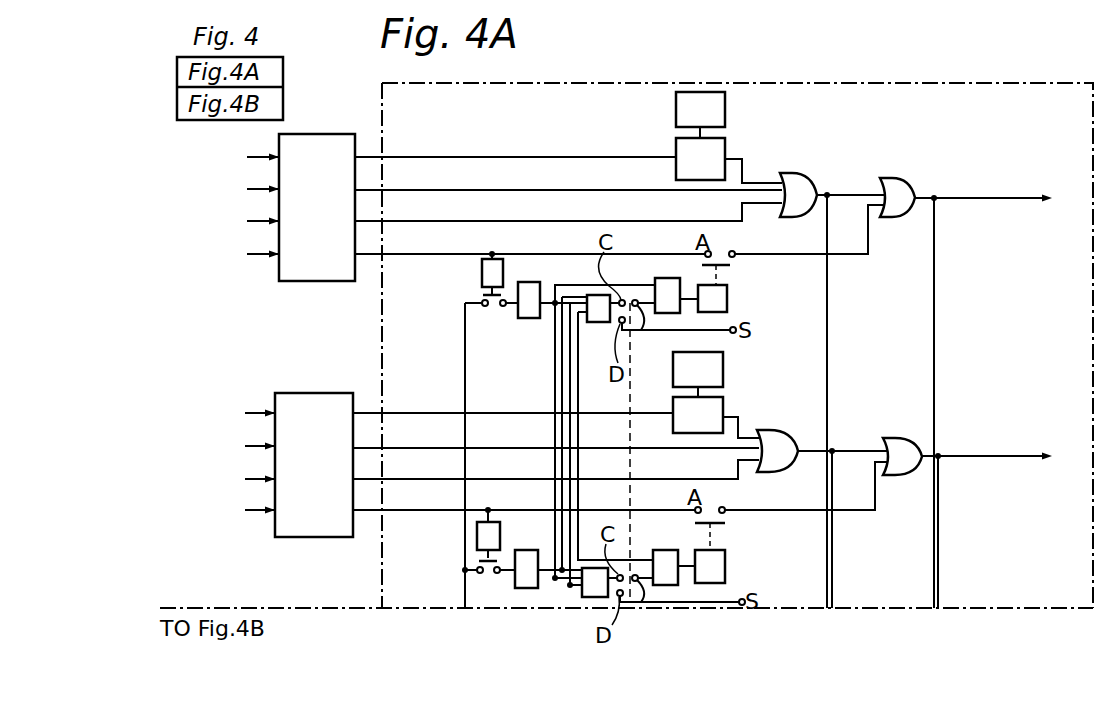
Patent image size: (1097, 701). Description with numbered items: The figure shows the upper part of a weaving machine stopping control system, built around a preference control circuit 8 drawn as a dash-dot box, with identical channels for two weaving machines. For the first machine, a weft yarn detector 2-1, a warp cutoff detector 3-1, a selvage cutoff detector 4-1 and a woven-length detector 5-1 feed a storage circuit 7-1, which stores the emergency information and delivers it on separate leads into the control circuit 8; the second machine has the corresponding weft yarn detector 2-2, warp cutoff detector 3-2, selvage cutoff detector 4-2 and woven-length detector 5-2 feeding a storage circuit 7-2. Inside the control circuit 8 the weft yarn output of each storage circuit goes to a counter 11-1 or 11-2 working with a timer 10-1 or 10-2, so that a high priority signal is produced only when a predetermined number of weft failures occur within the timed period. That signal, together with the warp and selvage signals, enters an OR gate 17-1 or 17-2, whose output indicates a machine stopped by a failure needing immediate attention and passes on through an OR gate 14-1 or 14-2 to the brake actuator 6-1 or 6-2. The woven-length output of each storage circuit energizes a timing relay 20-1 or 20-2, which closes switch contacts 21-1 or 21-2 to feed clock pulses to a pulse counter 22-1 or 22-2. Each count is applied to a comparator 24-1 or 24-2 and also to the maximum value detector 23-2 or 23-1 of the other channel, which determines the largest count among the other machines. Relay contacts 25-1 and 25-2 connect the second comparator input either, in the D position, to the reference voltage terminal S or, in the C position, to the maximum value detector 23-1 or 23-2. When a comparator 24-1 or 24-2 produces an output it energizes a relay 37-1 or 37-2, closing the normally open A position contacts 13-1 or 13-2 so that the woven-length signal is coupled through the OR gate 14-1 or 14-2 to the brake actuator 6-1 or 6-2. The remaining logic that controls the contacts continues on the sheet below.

The preference control circuit 8 is at (909, 81).
The storage circuit 7-1 is at (317, 207).
The storage circuit 7-2 is at (314, 465).
The weft yarn detector 2-1 is at (237, 157).
The warp cutoff detector 3-1 is at (237, 189).
The selvage cutoff detector 4-1 is at (237, 221).
The woven-length detector 5-1 is at (237, 254).
The weft yarn detector 2-2 is at (231, 413).
The warp cutoff detector 3-2 is at (231, 446).
The selvage cutoff detector 4-2 is at (231, 479).
The woven-length detector 5-2 is at (231, 510).
The brake actuator 6-1 is at (1026, 185).
The brake actuator 6-2 is at (1024, 443).
The timer 10-1 is at (700, 115).
The timer 10-2 is at (698, 374).
The counter 11-1 is at (702, 159).
The counter 11-2 is at (699, 415).
The OR gate 17-1 is at (797, 173).
The OR gate 17-2 is at (778, 430).
The OR gate 14-1 is at (898, 178).
The OR gate 14-2 is at (896, 438).
The switch contacts 13-1 is at (751, 269).
The switch contacts 13-2 is at (742, 528).
The timing relay 20-1 is at (504, 267).
The timing relay 20-2 is at (500, 526).
The switch contacts 21-1 is at (488, 307).
The switch contacts 21-2 is at (482, 574).
The pulse counter 22-1 is at (525, 320).
The pulse counter 22-2 is at (525, 590).
The maximum value detector 23-1 is at (597, 323).
The maximum value detector 23-2 is at (595, 582).
The comparator 24-1 is at (659, 278).
The comparator 24-2 is at (665, 550).
The relay contacts 25-1 is at (627, 323).
The relay contacts 25-2 is at (638, 582).
The relay 37-1 is at (727, 298).
The relay 37-2 is at (725, 566).